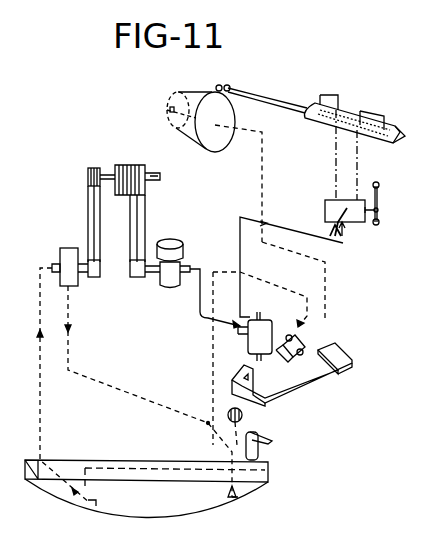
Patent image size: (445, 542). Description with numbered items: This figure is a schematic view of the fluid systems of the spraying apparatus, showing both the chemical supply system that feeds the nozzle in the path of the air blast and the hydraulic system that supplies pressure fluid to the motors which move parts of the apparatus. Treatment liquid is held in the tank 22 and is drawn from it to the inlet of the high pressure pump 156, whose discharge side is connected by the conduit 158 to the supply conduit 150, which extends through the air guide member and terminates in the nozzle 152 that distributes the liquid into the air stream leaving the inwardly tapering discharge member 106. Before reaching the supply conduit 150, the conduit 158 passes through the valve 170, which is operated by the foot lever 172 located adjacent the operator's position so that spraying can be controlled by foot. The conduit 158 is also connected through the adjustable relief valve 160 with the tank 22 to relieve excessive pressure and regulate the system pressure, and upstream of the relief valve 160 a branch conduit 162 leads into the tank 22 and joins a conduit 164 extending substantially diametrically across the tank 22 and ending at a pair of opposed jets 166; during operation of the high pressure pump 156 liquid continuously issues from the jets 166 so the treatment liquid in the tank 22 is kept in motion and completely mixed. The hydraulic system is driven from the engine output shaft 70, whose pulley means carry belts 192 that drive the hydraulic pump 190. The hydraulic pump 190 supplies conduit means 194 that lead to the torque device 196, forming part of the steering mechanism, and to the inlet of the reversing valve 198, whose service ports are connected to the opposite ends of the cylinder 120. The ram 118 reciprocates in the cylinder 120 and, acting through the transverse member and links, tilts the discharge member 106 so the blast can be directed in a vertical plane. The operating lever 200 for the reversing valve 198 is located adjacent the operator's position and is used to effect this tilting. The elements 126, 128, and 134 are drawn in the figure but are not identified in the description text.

The tank 22 is at (270, 479).
The output shaft 70 is at (153, 178).
The discharge member 106 is at (213, 90).
The ram 118 is at (282, 98).
The cylinder 120 is at (346, 117).
The sensor 126 is at (329, 95).
The sensor 128 is at (378, 106).
The control line 134 is at (40, 412).
The supply conduit 150 is at (178, 100).
The nozzle 152 is at (169, 110).
The high pressure pump 156 is at (70, 232).
The conduit 158 is at (68, 318).
The relief valve 160 is at (259, 452).
The branch conduit 162 is at (210, 445).
The conduit 164 is at (153, 470).
The jets 166 is at (80, 500).
The valve 170 is at (305, 340).
The foot lever 172 is at (342, 350).
The hydraulic pump 190 is at (180, 256).
The belts 192 is at (146, 226).
The conduit means 194 is at (200, 314).
The torque device 196 is at (272, 332).
The reversing valve 198 is at (356, 222).
The operating lever 200 is at (380, 190).